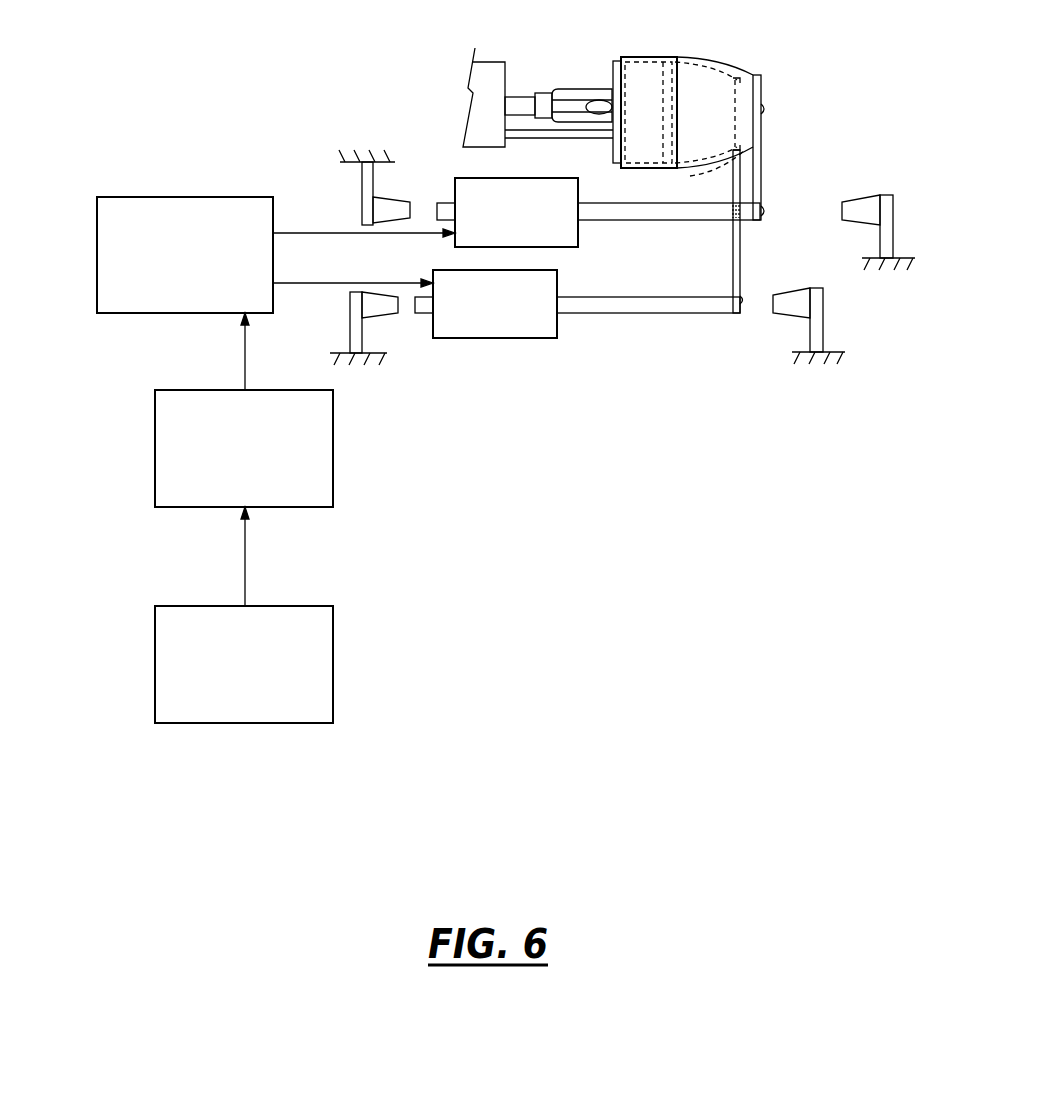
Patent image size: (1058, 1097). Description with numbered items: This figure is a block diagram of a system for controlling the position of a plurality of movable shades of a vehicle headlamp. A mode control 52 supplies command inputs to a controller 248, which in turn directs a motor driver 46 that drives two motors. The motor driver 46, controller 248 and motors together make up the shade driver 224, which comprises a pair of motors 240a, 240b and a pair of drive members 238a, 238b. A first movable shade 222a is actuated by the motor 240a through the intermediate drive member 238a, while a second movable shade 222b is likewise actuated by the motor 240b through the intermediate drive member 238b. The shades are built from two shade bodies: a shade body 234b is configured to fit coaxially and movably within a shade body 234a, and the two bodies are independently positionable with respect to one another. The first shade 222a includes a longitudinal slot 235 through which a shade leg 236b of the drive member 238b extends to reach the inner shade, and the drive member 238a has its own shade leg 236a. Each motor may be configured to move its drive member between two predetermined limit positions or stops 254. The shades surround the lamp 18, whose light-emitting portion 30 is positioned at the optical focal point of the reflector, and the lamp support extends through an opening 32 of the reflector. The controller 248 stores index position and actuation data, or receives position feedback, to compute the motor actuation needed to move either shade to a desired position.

The motor driver 46 is at (97, 238).
The controller 248 is at (333, 500).
The mode control 52 is at (333, 650).
The motor 240a is at (455, 185).
The motor 240b is at (464, 338).
The drive member 238a is at (672, 220).
The drive member 238b is at (650, 313).
The shade driver 224 is at (648, 353).
The shade leg 236a is at (762, 172).
The shade leg 236b is at (742, 262).
The first movable shade 222a is at (805, 129).
The second movable shade 222b is at (600, 147).
The shade body 234a is at (667, 55).
The shade body 234b is at (722, 54).
The longitudinal slot 235 is at (705, 172).
The opening 32 is at (505, 80).
The lamp 18 is at (568, 80).
The light-emitting portion 30 is at (602, 100).
The stops 254 is at (362, 180).